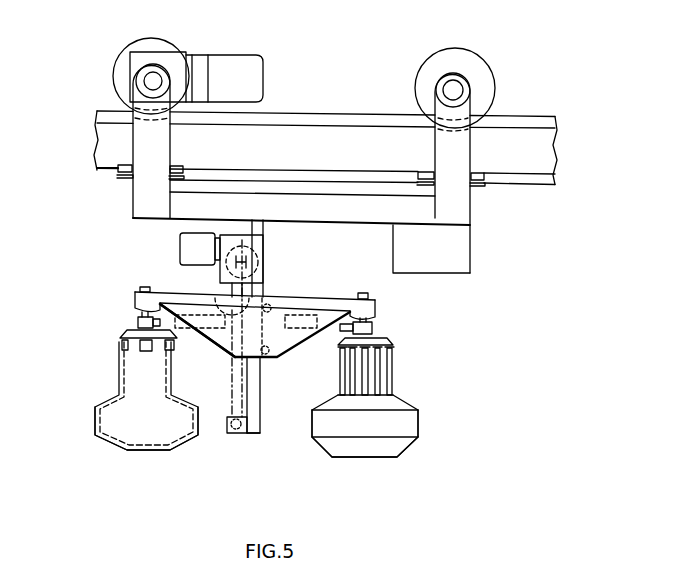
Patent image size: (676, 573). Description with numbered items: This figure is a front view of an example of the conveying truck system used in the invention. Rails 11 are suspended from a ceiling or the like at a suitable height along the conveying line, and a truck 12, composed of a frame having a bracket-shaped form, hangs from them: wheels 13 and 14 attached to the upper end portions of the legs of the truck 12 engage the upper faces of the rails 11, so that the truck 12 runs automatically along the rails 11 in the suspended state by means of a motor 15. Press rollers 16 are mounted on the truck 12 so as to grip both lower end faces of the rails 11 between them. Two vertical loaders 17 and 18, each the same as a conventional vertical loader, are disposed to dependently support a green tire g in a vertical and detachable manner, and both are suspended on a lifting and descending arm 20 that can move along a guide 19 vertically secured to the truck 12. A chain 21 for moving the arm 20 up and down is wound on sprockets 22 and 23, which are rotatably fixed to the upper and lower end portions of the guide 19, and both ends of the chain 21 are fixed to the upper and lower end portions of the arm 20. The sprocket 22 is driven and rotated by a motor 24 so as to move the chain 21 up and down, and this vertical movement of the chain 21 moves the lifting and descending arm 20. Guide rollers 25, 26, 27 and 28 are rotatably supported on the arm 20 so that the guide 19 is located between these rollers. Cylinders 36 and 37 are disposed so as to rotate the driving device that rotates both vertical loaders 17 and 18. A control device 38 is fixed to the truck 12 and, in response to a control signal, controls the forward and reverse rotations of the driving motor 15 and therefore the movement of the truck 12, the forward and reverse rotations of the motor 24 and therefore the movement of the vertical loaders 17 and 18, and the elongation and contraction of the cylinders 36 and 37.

The rails 11 is at (520, 115).
The truck 12 is at (466, 212).
The wheel 13 is at (168, 44).
The wheel 14 is at (490, 68).
The motor 15 is at (260, 56).
The press rollers 16 is at (123, 166).
The vertical loader 17 is at (392, 370).
The vertical loader 18 is at (172, 383).
The guide 19 is at (260, 424).
The lifting and descending arm 20 is at (296, 340).
The chain 21 is at (247, 390).
The sprocket 22 is at (263, 246).
The sprocket 23 is at (237, 434).
The motor 24 is at (180, 242).
The guide roller 25 is at (270, 306).
The guide roller 26 is at (272, 365).
The guide roller 27 is at (230, 358).
The guide roller 28 is at (213, 293).
The cylinder 36 is at (372, 309).
The cylinder 37 is at (135, 303).
The control device 38 is at (468, 268).
The glass sheet g is at (95, 425).